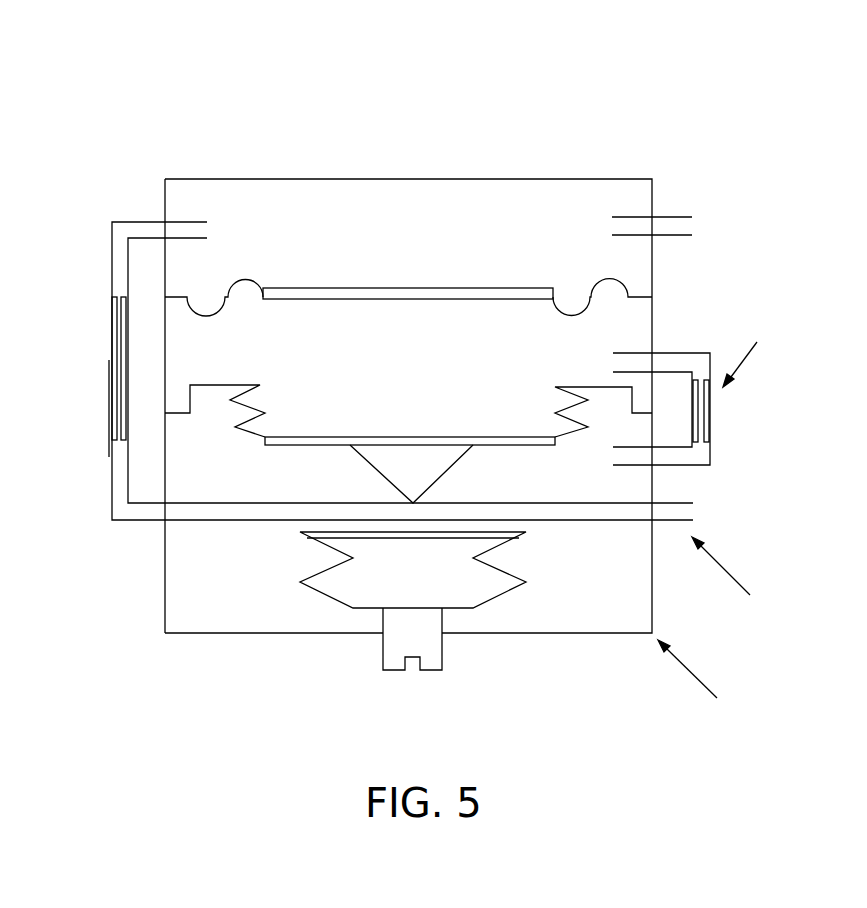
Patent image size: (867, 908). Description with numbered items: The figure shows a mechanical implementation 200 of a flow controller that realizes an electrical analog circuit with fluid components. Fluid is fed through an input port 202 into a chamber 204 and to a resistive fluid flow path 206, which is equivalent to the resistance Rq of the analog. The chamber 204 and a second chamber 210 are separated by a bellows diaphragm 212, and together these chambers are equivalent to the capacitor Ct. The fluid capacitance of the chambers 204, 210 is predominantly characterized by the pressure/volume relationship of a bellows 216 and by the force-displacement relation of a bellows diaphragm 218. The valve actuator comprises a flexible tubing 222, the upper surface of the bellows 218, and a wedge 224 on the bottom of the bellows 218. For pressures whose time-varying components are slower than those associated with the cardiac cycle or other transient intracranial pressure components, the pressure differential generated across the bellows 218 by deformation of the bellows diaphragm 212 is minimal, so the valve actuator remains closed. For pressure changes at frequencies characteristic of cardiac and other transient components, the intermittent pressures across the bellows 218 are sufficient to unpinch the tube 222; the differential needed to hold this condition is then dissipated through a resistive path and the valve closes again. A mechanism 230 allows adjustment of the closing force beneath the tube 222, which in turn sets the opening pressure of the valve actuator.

The mechanical implementation 200 is at (323, 82).
The input port 202 is at (672, 208).
The chamber 204 is at (441, 247).
The resistive fluid flow path 206 is at (97, 350).
The chamber 210 is at (441, 378).
The bellows diaphragm 212 is at (330, 279).
The bellows 216 is at (327, 595).
The bellows diaphragm 218 is at (347, 437).
The flexible tubing 222 is at (257, 497).
The wedge 224 is at (445, 492).
The mechanism 230 is at (448, 667).